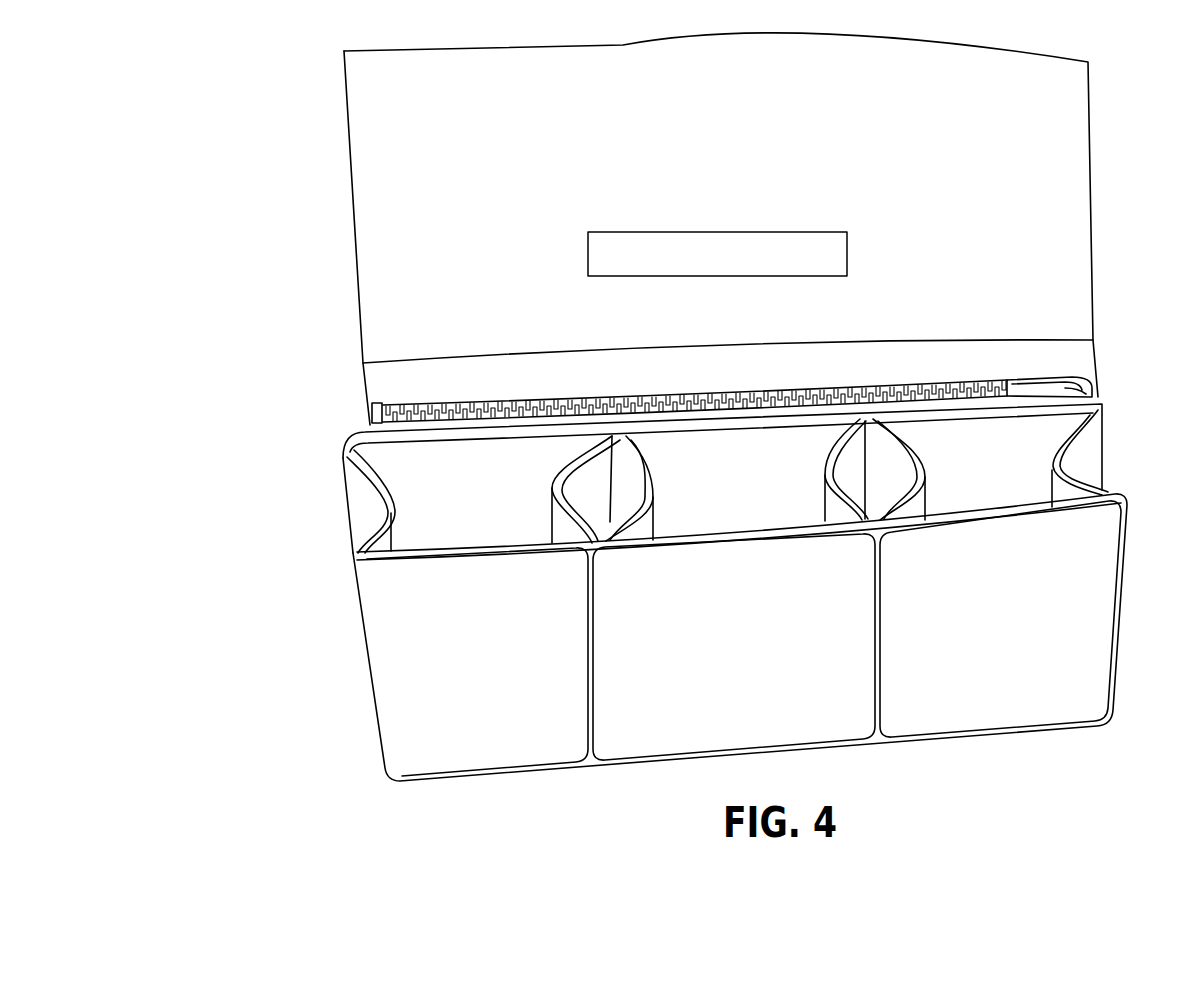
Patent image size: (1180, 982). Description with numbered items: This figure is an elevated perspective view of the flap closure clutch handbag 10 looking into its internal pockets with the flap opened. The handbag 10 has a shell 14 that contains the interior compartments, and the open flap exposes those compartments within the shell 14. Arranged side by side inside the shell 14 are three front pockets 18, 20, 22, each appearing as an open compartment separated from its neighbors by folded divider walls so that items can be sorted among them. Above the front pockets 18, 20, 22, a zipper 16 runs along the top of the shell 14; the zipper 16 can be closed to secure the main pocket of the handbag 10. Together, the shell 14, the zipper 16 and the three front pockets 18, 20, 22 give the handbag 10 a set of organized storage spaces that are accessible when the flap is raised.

The flap closure clutch handbag 10 is at (669, 407).
The shell 14 is at (1119, 622).
The zipper 16 is at (1095, 393).
The front pocket 18 is at (491, 528).
The front pocket 20 is at (732, 503).
The front pocket 22 is at (991, 487).